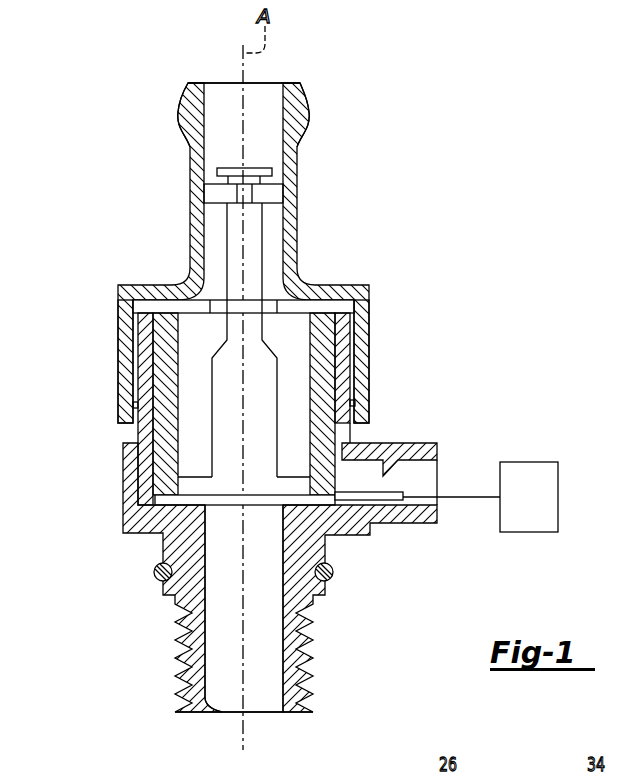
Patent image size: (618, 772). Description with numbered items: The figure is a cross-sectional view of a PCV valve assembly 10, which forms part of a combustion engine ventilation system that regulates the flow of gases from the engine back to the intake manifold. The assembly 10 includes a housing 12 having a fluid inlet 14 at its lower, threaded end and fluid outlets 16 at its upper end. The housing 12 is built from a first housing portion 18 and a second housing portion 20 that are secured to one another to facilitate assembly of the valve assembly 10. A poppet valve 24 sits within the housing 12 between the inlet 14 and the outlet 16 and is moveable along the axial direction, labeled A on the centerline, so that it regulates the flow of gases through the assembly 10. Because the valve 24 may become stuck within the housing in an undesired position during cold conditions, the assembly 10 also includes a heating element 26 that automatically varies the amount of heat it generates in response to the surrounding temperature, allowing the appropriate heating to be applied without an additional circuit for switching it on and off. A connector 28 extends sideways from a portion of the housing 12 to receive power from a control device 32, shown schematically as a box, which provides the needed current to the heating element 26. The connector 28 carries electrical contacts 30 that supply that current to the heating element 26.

The PCV valve assembly 10 is at (342, 203).
The housing 12 is at (377, 281).
The fluid inlet 14 is at (208, 700).
The fluid outlets 16 is at (208, 102).
The first housing portion 18 is at (345, 537).
The second housing portion 20 is at (372, 330).
The poppet valve 24 is at (228, 382).
The heating element 26 is at (341, 403).
The connector 28 is at (432, 443).
The electrical contacts 30 is at (385, 500).
The control device 32 is at (542, 507).